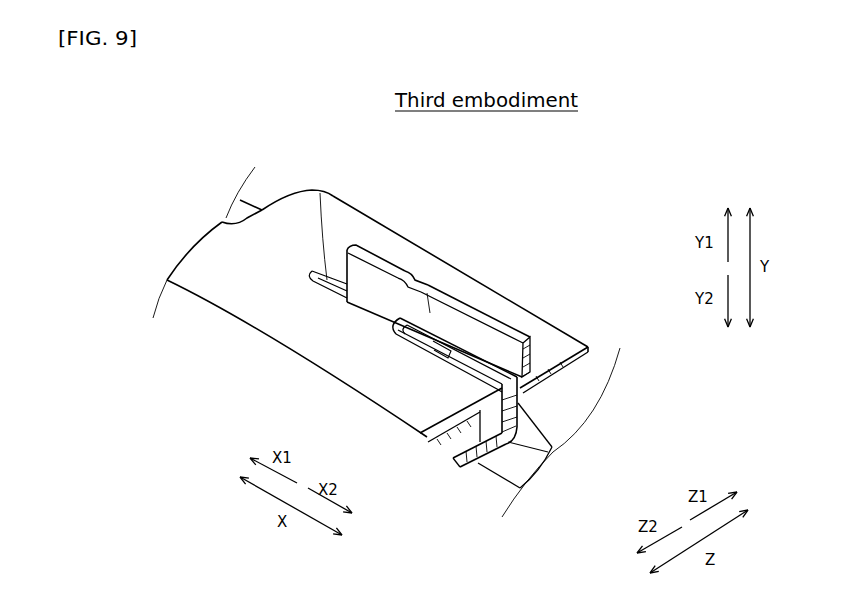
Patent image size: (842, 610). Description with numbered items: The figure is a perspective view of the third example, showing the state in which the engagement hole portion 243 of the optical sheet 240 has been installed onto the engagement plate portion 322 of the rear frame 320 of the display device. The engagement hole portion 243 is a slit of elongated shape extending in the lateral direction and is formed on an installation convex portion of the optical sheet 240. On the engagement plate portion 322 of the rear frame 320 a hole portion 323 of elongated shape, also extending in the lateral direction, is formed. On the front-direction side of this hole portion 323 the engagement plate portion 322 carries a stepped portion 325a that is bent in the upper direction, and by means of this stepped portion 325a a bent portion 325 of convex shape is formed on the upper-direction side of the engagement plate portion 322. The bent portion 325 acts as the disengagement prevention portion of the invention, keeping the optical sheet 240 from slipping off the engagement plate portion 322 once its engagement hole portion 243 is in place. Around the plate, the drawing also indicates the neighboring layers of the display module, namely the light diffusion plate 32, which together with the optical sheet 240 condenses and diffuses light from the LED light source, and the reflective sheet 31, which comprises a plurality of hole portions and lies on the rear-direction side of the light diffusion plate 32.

The rear frame 320 is at (222, 222).
The engagement hole portion 243 is at (320, 191).
The optical sheet 240 is at (227, 287).
The engagement plate portion 322 is at (542, 372).
The bent portion 325 is at (480, 340).
The stepped portion 325a is at (412, 308).
The hole portion 323 is at (397, 337).
The light diffusion plate 32 is at (450, 460).
The reflective sheet 31 is at (477, 467).